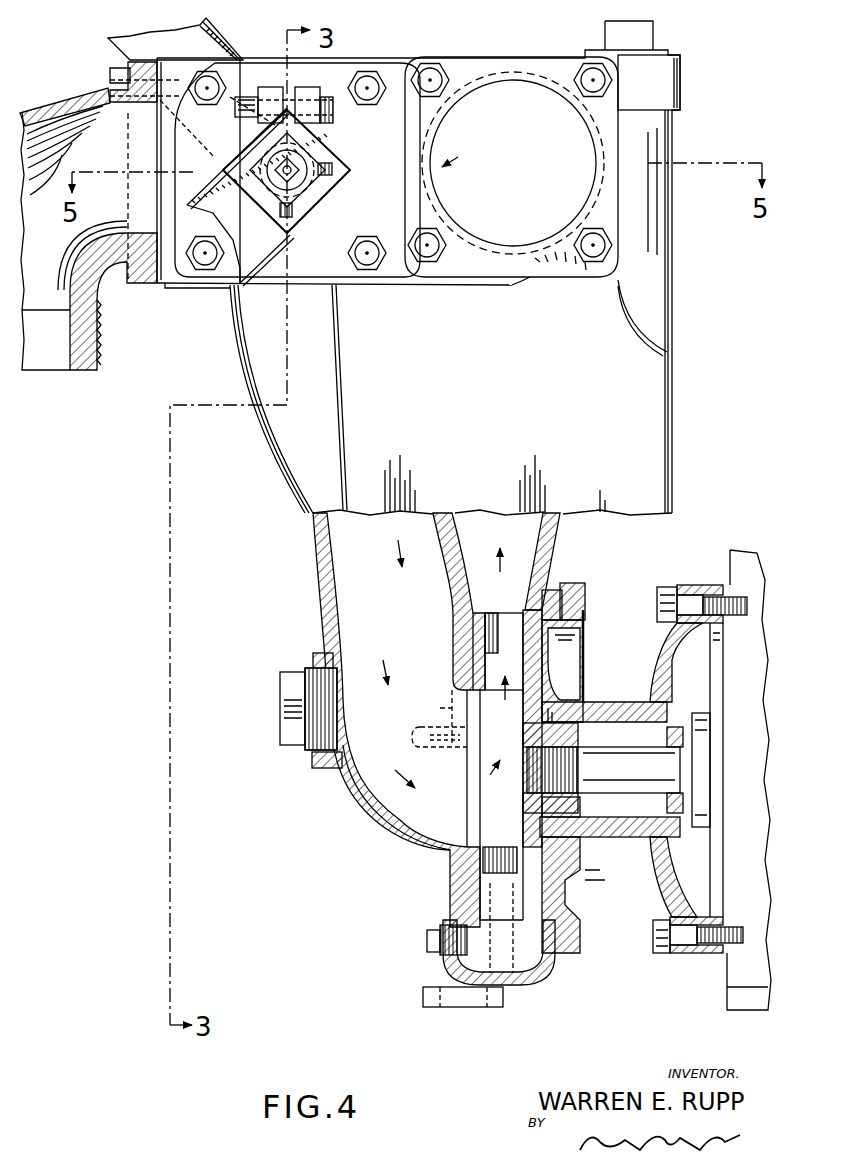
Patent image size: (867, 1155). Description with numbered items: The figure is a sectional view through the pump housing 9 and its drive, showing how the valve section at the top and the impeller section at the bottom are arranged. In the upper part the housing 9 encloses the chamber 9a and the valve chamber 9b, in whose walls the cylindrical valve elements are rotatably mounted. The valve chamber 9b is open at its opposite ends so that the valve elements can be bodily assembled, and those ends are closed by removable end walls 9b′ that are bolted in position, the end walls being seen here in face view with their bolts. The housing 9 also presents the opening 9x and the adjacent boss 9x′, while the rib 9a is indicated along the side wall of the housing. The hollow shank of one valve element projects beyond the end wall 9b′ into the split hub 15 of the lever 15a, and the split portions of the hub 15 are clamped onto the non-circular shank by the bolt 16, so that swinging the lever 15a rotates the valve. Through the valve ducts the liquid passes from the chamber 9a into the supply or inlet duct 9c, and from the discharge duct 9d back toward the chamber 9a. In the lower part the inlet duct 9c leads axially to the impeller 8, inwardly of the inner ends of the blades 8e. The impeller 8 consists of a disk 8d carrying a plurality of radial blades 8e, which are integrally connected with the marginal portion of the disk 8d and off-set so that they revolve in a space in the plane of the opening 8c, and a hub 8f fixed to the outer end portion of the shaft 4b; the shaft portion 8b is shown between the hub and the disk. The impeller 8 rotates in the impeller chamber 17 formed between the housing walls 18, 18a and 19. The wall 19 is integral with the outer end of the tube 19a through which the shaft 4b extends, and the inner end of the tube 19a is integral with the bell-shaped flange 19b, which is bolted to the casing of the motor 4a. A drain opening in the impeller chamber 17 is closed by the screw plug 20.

The housing 9 is at (697, 375).
The chamber 9a is at (640, 220).
The housing chamber 9b is at (172, 265).
The removable end walls 9b′ is at (345, 270).
The housing opening 9x is at (600, 150).
The housing opening boss 9x′ is at (525, 280).
The supply or inlet duct 9c is at (362, 770).
The duct 9d is at (555, 535).
The split hub 15 is at (315, 193).
The lever 15a is at (213, 42).
The bolt 16 is at (322, 95).
The impeller chamber 17 is at (525, 975).
The housing wall 18 is at (395, 835).
The housing wall 18a is at (460, 622).
The wall 19 is at (552, 660).
The tube 19a is at (598, 838).
The bell-shaped flange 19b is at (655, 878).
The screw plug 20 is at (425, 940).
The impeller 8 is at (510, 655).
The shaft portion 8b is at (475, 795).
The opening 8c is at (512, 590).
The disk 8d is at (513, 705).
The radial blades 8e is at (458, 658).
The hub 8f is at (560, 695).
The motor 4a is at (735, 978).
The shaft 4b is at (675, 765).